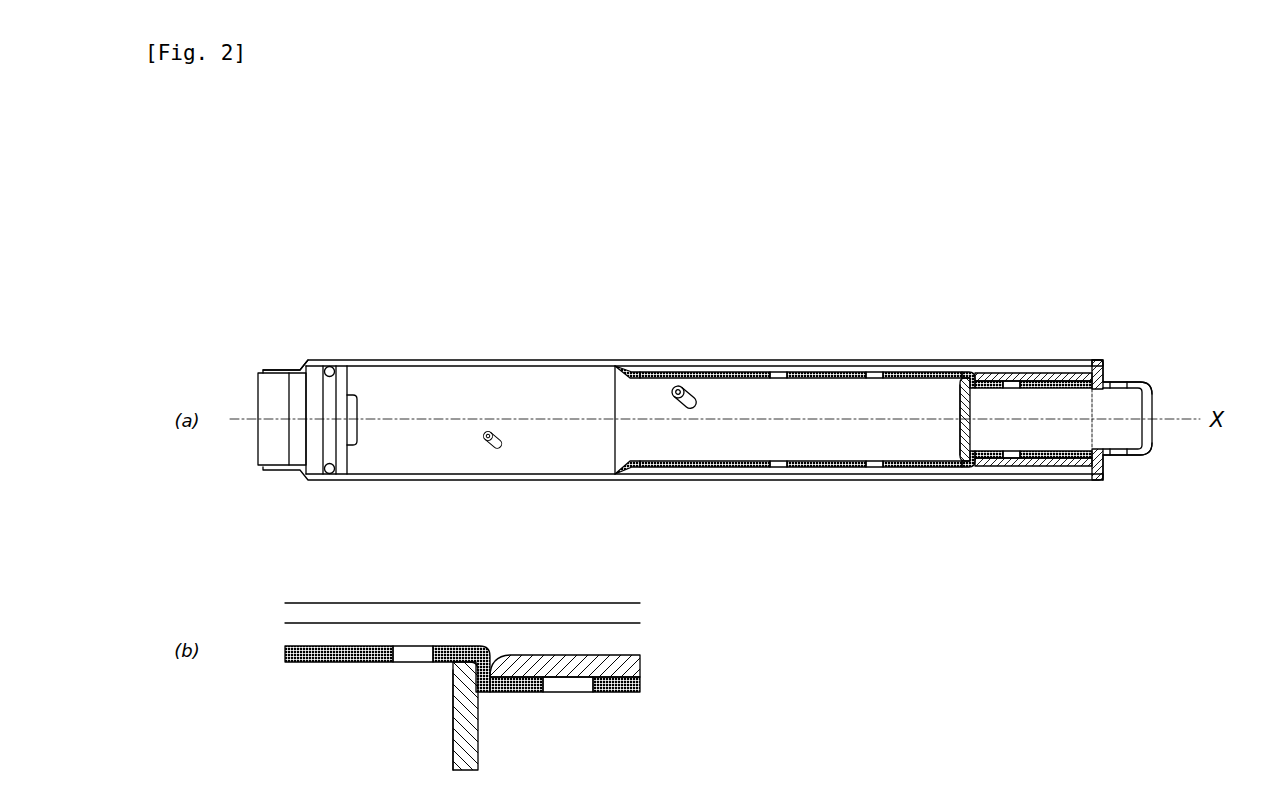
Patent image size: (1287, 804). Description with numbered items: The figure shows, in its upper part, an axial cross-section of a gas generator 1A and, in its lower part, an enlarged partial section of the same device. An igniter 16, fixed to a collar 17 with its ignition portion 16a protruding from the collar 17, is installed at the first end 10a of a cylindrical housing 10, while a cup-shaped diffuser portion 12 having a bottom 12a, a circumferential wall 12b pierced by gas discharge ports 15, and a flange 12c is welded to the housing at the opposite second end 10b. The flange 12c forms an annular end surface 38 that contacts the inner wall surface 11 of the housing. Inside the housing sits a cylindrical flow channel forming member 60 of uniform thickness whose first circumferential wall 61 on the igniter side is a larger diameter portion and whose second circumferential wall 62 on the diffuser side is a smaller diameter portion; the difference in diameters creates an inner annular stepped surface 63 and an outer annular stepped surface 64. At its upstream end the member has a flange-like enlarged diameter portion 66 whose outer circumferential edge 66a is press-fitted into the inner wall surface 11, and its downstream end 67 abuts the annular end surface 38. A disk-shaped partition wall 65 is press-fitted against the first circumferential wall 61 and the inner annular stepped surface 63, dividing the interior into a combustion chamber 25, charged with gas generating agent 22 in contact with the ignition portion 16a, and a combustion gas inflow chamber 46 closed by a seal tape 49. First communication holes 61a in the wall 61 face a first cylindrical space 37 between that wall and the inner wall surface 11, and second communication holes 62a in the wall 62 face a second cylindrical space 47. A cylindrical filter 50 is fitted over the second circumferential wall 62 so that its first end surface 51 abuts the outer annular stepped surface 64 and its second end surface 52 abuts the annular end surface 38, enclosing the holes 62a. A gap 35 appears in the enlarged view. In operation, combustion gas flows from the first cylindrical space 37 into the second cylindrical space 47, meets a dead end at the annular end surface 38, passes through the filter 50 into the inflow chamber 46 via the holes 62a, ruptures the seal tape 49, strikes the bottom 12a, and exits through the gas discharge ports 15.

The gas generator 1A is at (689, 350).
The cylindrical housing 10 is at (535, 359).
The first end 10a is at (256, 477).
The second end 10b is at (1103, 481).
The inner wall surface 11 is at (492, 372).
The diffuser portion 12 is at (1158, 393).
The bottom 12a is at (1146, 441).
The circumferential wall 12b is at (1141, 382).
The flange 12c is at (1101, 376).
The gas discharge ports 15 is at (1117, 456).
The igniter 16 is at (266, 391).
The ignition portion 16a is at (358, 405).
The collar 17 is at (262, 441).
The gas generating agent 22 is at (703, 400).
The combustion chamber 25 is at (535, 461).
The gap 35 is at (415, 651).
The first cylindrical space 37 is at (900, 371).
The annular end surface 38 is at (1097, 362).
The combustion gas inflow chamber 46 is at (993, 443).
The second cylindrical space 47 is at (1050, 374).
The seal tape 49 is at (1095, 416).
The cylindrical filter 50 is at (1001, 480).
The first end surface 51 is at (962, 471).
The second end surface 52 is at (1104, 466).
The cylindrical flow channel forming member 60 is at (819, 366).
The first circumferential wall 61 is at (740, 371).
The first communication holes 61a is at (780, 371).
The second circumferential wall 62 is at (1030, 380).
The second communication holes 62a is at (1012, 389).
The inner annular stepped surface 63 is at (960, 385).
The outer annular stepped surface 64 is at (989, 372).
The partition wall 65 is at (960, 432).
The enlarged diameter portion 66 is at (612, 377).
The outer circumferential edge 66a is at (620, 371).
The downstream end 67 is at (1150, 447).